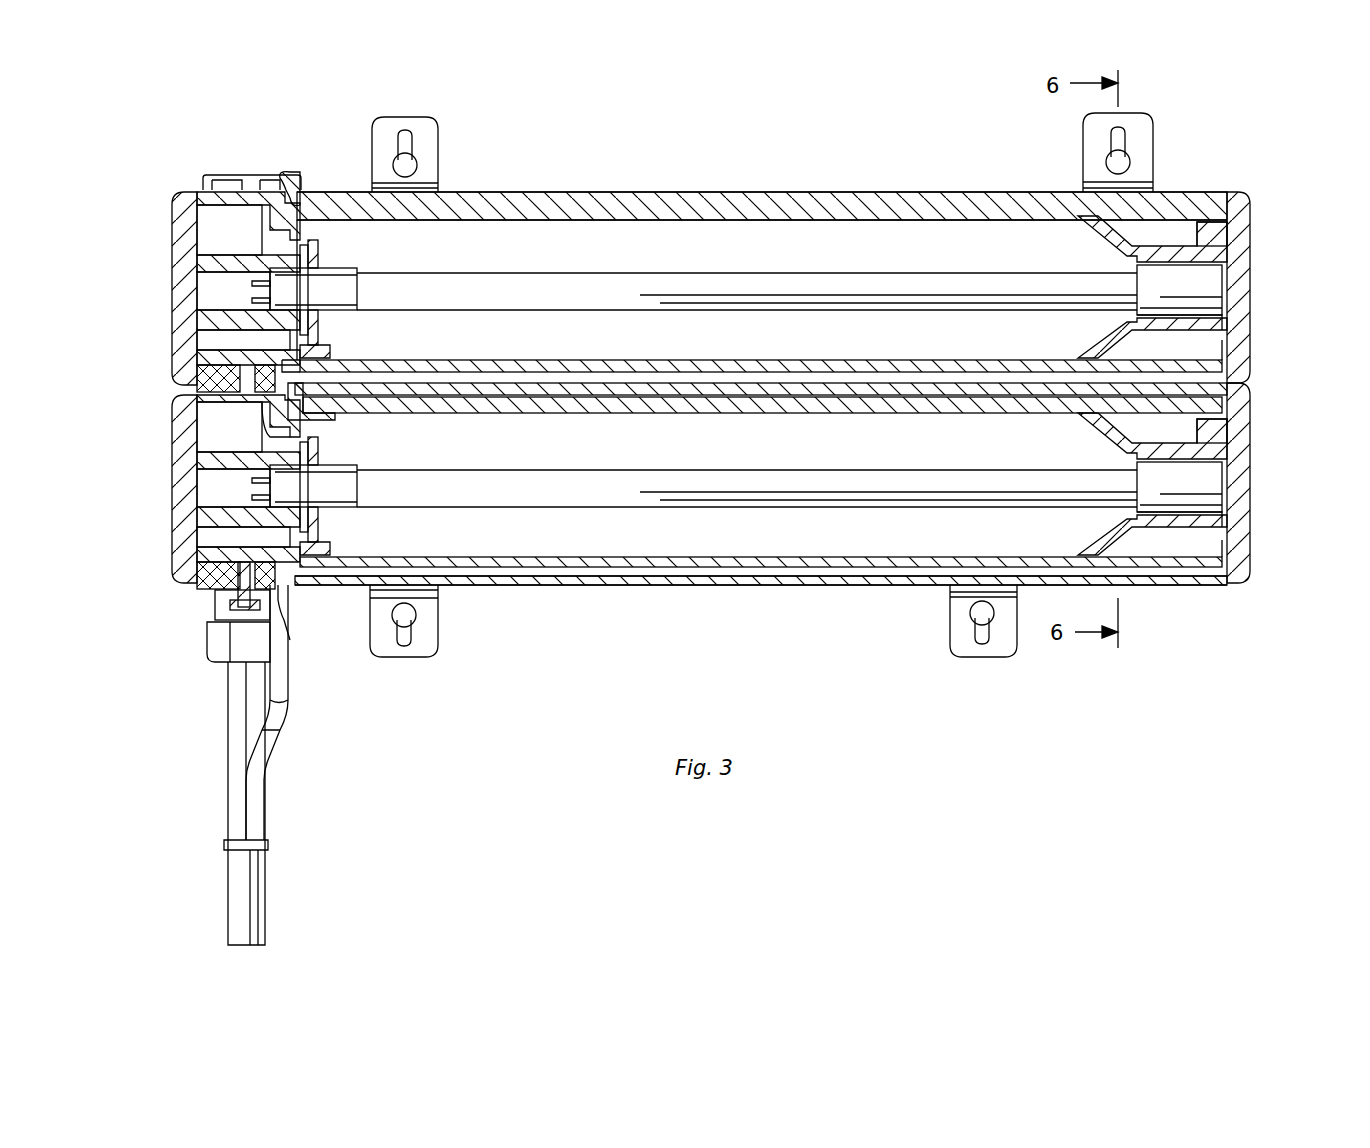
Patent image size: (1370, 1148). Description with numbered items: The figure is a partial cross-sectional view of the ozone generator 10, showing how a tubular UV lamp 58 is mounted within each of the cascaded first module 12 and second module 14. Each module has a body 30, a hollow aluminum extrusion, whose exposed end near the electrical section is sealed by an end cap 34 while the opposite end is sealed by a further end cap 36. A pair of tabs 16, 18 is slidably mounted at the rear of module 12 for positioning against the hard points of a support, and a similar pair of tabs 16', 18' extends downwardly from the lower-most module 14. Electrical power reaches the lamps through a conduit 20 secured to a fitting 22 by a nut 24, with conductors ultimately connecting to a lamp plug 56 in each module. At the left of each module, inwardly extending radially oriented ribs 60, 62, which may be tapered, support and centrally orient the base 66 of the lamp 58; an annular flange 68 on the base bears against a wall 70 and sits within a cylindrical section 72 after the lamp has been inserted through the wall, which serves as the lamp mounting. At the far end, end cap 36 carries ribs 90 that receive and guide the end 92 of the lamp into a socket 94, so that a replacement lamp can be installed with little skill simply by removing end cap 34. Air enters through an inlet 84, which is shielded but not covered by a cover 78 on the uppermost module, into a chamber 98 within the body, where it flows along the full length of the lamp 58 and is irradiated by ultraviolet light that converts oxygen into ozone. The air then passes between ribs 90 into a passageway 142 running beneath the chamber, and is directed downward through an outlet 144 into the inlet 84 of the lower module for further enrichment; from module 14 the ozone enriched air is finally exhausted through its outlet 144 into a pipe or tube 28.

The ozone generator 10 is at (596, 734).
The first module 12 is at (632, 190).
The second module 14 is at (745, 587).
The tab 16 is at (1057, 144).
The tab 16' is at (996, 649).
The tab 18 is at (428, 144).
The tab 18' is at (429, 645).
The conduit 20 is at (228, 735).
The fitting 22 is at (218, 615).
The nut 24 is at (210, 650).
The pipe or tube 28 is at (282, 760).
The body 30 is at (762, 190).
The end cap 34 is at (172, 220).
The end cap 36 is at (1250, 200).
The lamp plug 56 is at (215, 290).
The lamp 58 is at (880, 273).
The rib 60 is at (215, 345).
The rib 62 is at (230, 250).
The base 66 is at (340, 268).
The annular flange 68 is at (305, 248).
The wall 70 is at (312, 330).
The cylindrical section 72 is at (280, 430).
The cover 78 is at (225, 175).
The inlet 84 is at (292, 172).
The rib 90 is at (1085, 225).
The end 92 is at (1225, 270).
The socket 94 is at (1225, 300).
The chamber 98 is at (545, 247).
The passageway 142 is at (1228, 368).
The outlet 144 is at (215, 372).